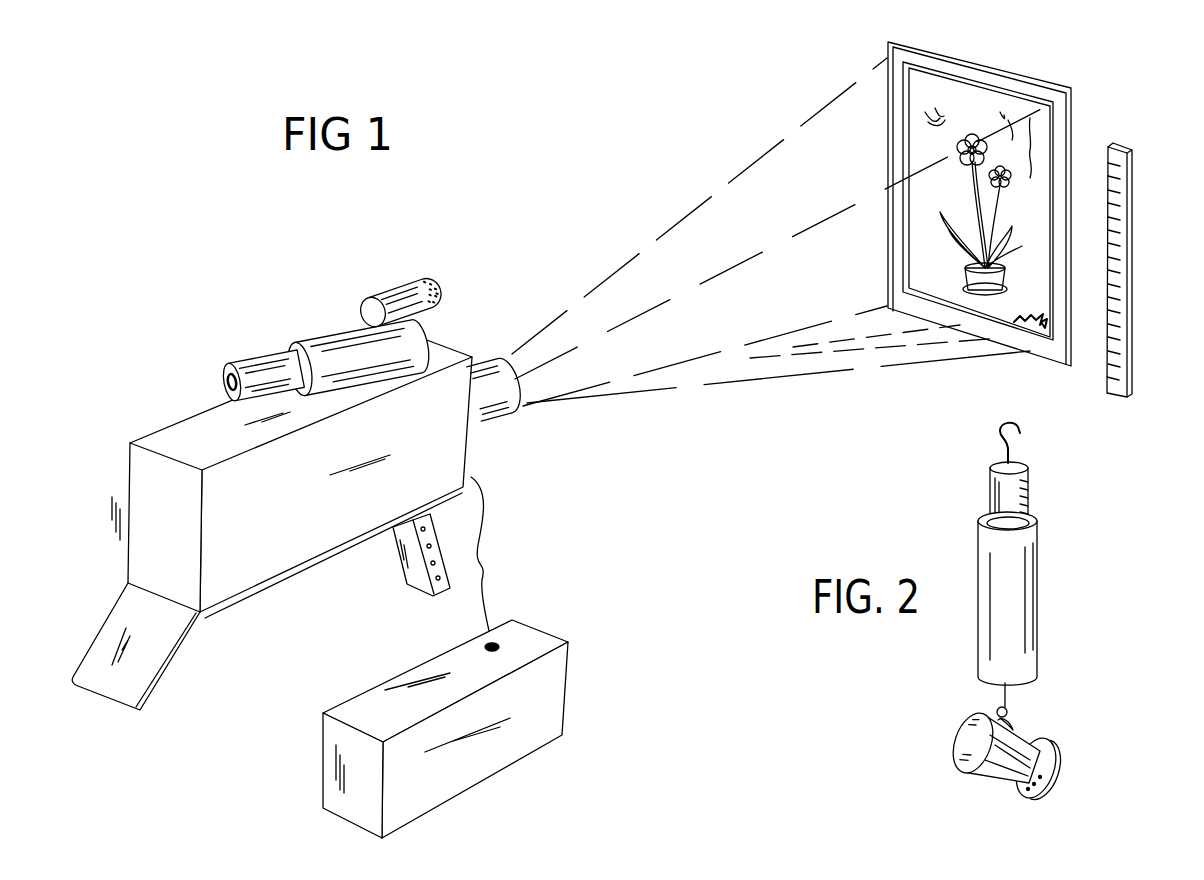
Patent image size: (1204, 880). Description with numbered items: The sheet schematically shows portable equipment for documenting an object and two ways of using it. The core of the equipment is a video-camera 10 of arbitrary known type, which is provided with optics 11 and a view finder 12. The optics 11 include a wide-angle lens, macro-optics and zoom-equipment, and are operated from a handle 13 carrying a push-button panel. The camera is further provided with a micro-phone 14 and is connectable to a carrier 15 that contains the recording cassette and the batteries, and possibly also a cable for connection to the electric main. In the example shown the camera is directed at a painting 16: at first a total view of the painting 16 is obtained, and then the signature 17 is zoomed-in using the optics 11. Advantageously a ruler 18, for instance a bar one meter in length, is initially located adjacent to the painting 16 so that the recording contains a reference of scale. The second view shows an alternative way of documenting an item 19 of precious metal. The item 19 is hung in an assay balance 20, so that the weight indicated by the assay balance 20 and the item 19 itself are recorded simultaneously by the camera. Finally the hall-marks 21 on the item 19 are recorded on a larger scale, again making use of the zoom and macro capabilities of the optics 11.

In FIG. 1, the video-camera 10 is at (445, 345).
In FIG. 1, the optics 11 is at (498, 390).
In FIG. 1, the view finder 12 is at (335, 348).
In FIG. 1, the handle 13 is at (407, 578).
In FIG. 1, the micro-phone 14 is at (397, 297).
In FIG. 1, the carrier 15 is at (533, 643).
In FIG. 1, the painting 16 is at (890, 123).
In FIG. 1, the signature 17 is at (1030, 327).
In FIG. 1, the ruler 18 is at (1120, 238).
In FIG. 2, the item of precious metal 19 is at (972, 735).
In FIG. 2, the assay balance 20 is at (1005, 605).
In FIG. 2, the hall-marks 21 is at (1042, 773).